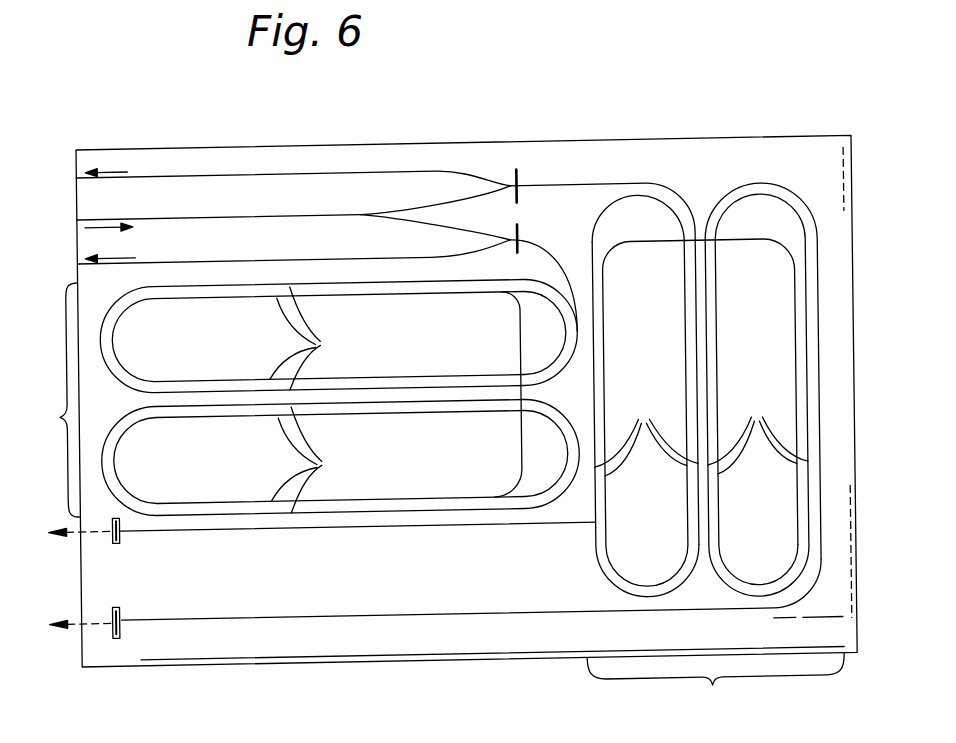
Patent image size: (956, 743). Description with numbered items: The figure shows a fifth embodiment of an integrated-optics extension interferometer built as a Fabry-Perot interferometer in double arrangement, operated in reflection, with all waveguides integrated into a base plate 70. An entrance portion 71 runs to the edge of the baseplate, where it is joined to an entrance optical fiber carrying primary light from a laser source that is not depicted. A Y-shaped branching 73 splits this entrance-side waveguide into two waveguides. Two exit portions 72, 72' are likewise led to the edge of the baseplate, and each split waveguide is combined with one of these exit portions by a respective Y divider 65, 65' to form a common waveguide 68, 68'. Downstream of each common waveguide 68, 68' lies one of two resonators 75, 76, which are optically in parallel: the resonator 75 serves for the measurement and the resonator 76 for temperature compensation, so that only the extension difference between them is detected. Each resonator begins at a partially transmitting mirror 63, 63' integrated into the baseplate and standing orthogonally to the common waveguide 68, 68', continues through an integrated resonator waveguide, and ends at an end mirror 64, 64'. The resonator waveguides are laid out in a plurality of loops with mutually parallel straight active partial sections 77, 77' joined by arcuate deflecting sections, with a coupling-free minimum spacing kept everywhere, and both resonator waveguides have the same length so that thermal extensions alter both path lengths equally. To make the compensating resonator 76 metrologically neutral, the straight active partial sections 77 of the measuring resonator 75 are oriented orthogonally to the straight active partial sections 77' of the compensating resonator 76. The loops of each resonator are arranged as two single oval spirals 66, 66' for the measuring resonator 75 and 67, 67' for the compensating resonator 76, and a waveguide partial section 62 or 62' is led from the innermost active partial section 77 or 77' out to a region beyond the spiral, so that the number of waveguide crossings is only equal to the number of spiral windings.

The waveguide partial section 62 is at (700, 391).
The waveguide partial section 62' is at (475, 394).
The partially transmitting mirror 63 is at (538, 145).
The partially transmitting mirror 63' is at (557, 224).
The end mirror 64 is at (435, 633).
The end mirror 64' is at (322, 554).
The Y divider 65 is at (436, 151).
The Y divider 65' is at (435, 164).
The oval spiral 66 is at (588, 419).
The oval spiral 66' is at (798, 389).
The oval spiral 67 is at (312, 297).
The oval spiral 67' is at (341, 425).
The common waveguide 68 is at (605, 316).
The common waveguide 68' is at (658, 201).
The base plate 70 is at (640, 155).
The entrance portion 71 is at (148, 218).
The exit portion 72 is at (293, 137).
The exit portion 72' is at (293, 176).
The Y-shaped branching 73 is at (362, 215).
The resonator 75 is at (715, 687).
The resonator 76 is at (57, 400).
The straight active partial section 77 is at (701, 433).
The straight active partial section 77' is at (314, 400).